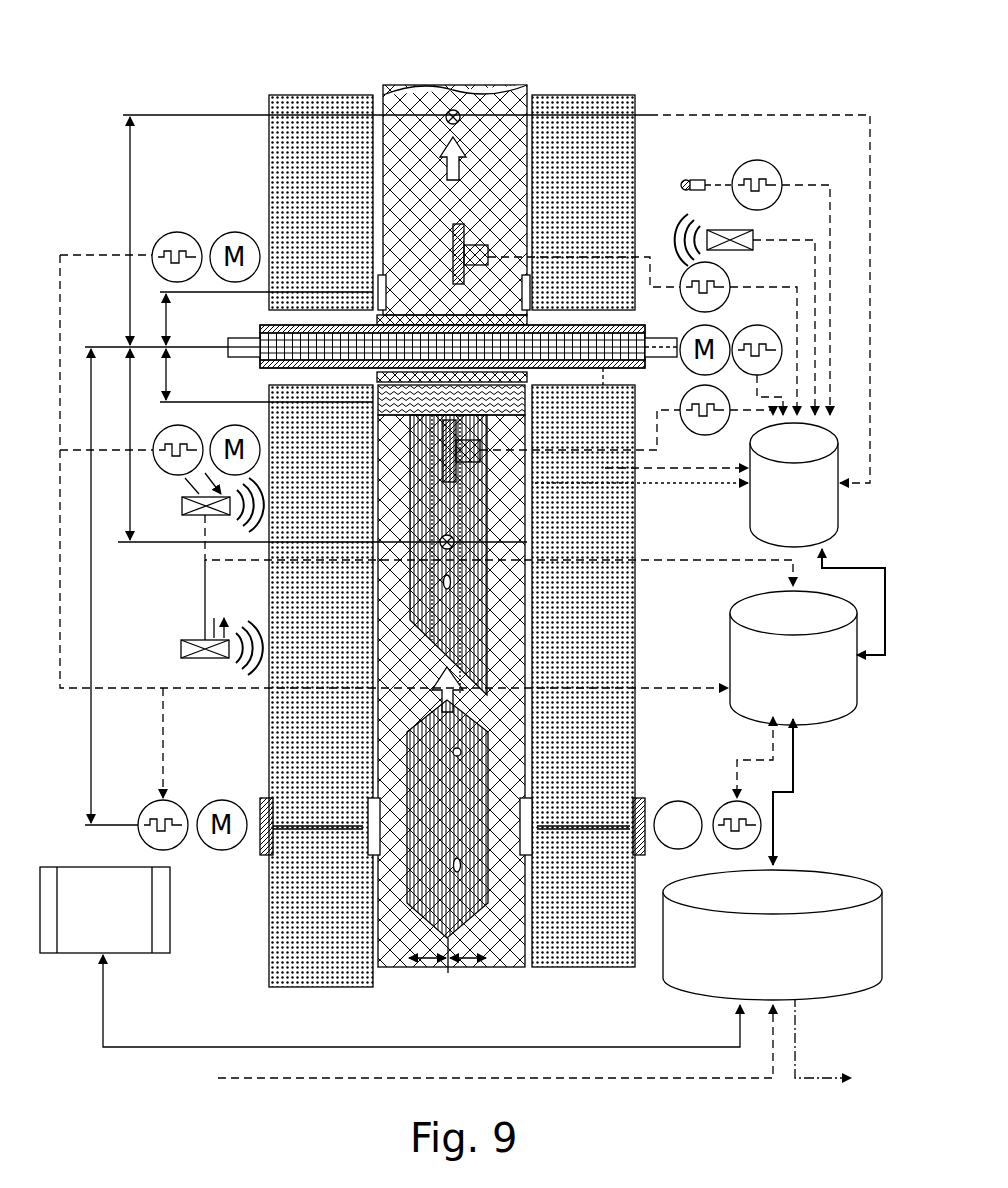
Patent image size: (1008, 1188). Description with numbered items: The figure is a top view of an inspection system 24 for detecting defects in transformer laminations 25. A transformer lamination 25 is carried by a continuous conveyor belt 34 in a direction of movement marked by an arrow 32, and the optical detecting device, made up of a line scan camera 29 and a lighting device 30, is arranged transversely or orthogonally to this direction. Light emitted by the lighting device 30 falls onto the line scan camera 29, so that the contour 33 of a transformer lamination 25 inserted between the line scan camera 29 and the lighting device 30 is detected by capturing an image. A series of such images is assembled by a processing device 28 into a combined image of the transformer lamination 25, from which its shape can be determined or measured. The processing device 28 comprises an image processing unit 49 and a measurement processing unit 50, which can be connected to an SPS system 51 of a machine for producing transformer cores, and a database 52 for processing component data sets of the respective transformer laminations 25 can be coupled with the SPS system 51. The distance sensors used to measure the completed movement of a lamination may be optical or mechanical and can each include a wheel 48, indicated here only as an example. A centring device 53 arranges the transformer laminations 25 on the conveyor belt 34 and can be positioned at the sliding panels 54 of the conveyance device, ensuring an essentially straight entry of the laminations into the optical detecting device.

The inspection system 24 is at (167, 60).
The transformer lamination 25 is at (380, 573).
The processing device 28 is at (826, 782).
The line scan camera 29 is at (260, 329).
The lighting device 30 is at (258, 366).
The arrow 32 is at (447, 108).
The contour 33 is at (403, 873).
The conveyor belt 34 is at (540, 745).
The wheel 48 is at (460, 224).
The image processing unit 49 is at (794, 485).
The measurement processing unit 50 is at (793, 658).
The SPS system 51 is at (772, 935).
The database 52 is at (105, 910).
The centring device 53 is at (541, 874).
The sliding panels 54 is at (345, 982).